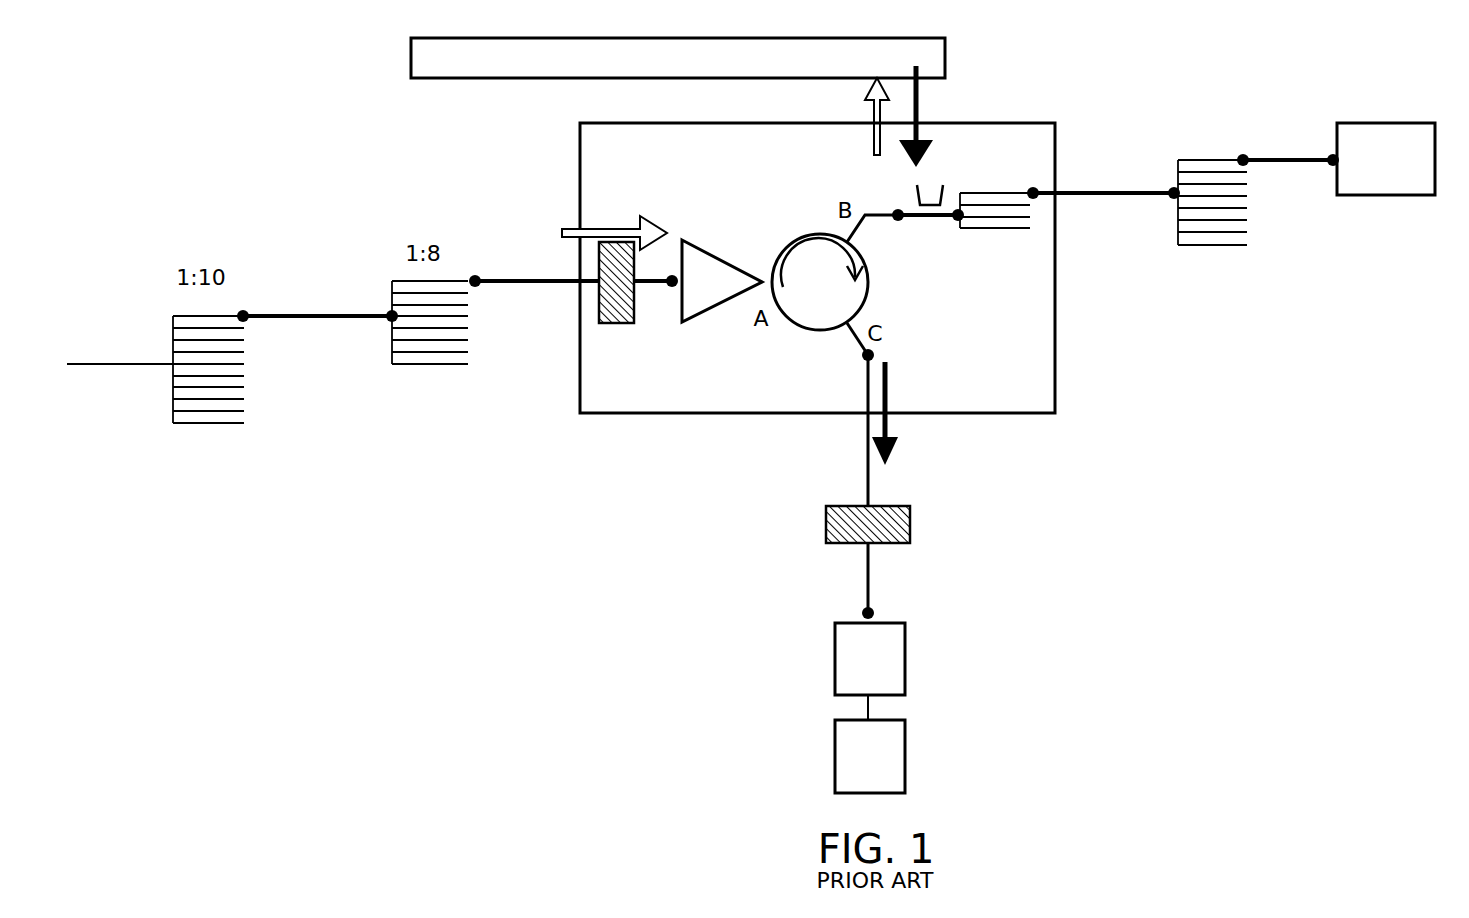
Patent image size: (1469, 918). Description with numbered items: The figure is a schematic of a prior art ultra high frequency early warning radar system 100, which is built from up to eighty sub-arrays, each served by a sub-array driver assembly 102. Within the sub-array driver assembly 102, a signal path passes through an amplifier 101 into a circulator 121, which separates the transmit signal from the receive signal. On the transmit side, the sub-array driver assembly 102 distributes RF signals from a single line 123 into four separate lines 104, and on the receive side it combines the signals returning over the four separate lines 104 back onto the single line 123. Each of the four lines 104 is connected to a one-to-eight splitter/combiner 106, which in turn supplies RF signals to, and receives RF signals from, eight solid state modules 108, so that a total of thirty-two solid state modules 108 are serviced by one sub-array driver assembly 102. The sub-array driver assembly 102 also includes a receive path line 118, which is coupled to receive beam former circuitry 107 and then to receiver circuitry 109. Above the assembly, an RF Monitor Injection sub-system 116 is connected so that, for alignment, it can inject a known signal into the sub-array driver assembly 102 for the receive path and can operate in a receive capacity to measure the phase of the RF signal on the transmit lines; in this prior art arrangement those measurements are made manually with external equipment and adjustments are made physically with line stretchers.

The UEWR system 100 is at (1222, 721).
The amplifier 101 is at (722, 281).
The sub-array driver assembly (SDA) 102 is at (670, 413).
The separate lines 104 is at (990, 230).
The 1:8 splitter/combiner 106 is at (1210, 247).
The receive beam former (RBF) circuitry 107 is at (905, 660).
The solid state module (SSM) 108 is at (1383, 197).
The receiver circuitry 109 is at (905, 757).
The RF Monitor Injection (RFM) sub-system 116 is at (411, 58).
The receive path line 118 is at (866, 480).
The circulator 121 is at (820, 282).
The single line 123 is at (927, 220).